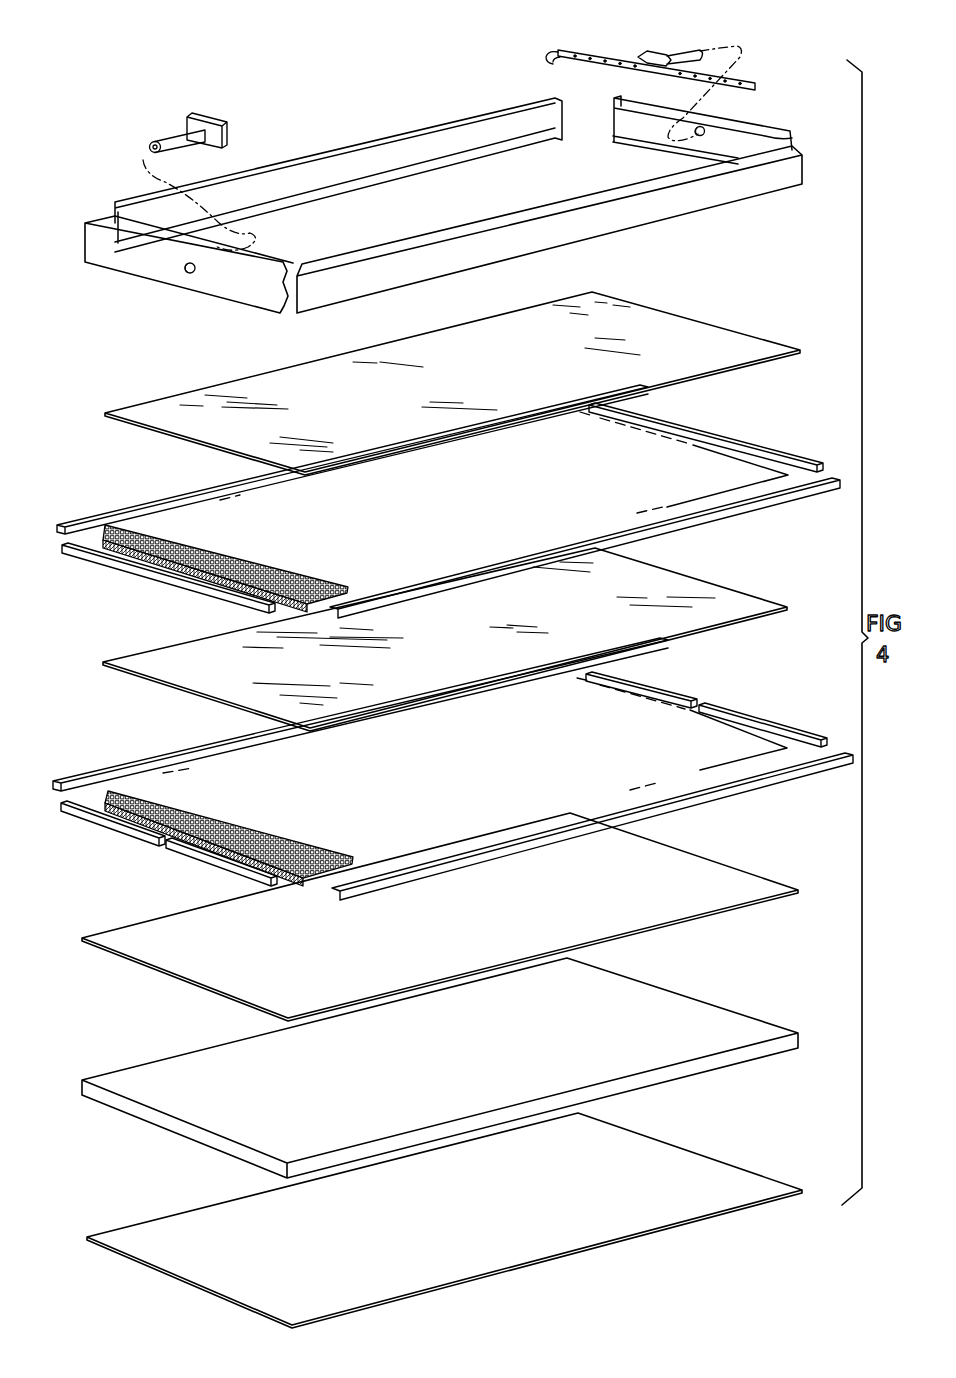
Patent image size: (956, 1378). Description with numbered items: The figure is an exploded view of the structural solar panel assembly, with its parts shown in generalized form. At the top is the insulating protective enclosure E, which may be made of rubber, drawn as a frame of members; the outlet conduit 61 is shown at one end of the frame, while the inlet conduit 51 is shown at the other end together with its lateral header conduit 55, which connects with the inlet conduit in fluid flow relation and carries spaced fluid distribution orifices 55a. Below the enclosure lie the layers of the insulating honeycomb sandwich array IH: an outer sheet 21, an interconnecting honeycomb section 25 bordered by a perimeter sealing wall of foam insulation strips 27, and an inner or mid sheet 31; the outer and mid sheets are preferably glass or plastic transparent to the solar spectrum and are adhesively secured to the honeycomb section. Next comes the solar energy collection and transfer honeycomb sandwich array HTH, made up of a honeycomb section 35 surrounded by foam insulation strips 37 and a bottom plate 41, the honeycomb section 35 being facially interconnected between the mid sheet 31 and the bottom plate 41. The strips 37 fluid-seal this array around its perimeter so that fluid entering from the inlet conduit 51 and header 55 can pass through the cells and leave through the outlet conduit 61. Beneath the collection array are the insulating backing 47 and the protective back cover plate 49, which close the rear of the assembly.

The insulating protective enclosure E is at (340, 150).
The outlet conduit 61 is at (157, 142).
The lateral header conduit 55 is at (580, 50).
The fluid distribution orifices 55a is at (548, 60).
The inlet conduit 51 is at (696, 50).
The outer sheet 21 is at (703, 324).
The honeycomb section 25 is at (695, 450).
The foam insulation strips 27 is at (792, 455).
The inner sheet 31 is at (720, 594).
The honeycomb section 35 is at (665, 715).
The foam insulation strips 37 is at (733, 695).
The bottom plate 41 is at (730, 878).
The insulating backing 47 is at (715, 1015).
The protective back cover plate 49 is at (724, 1179).
The insulating honeycomb sandwich array IH is at (58, 410).
The energy collection and transfer honeycomb sandwich array HTH is at (56, 766).